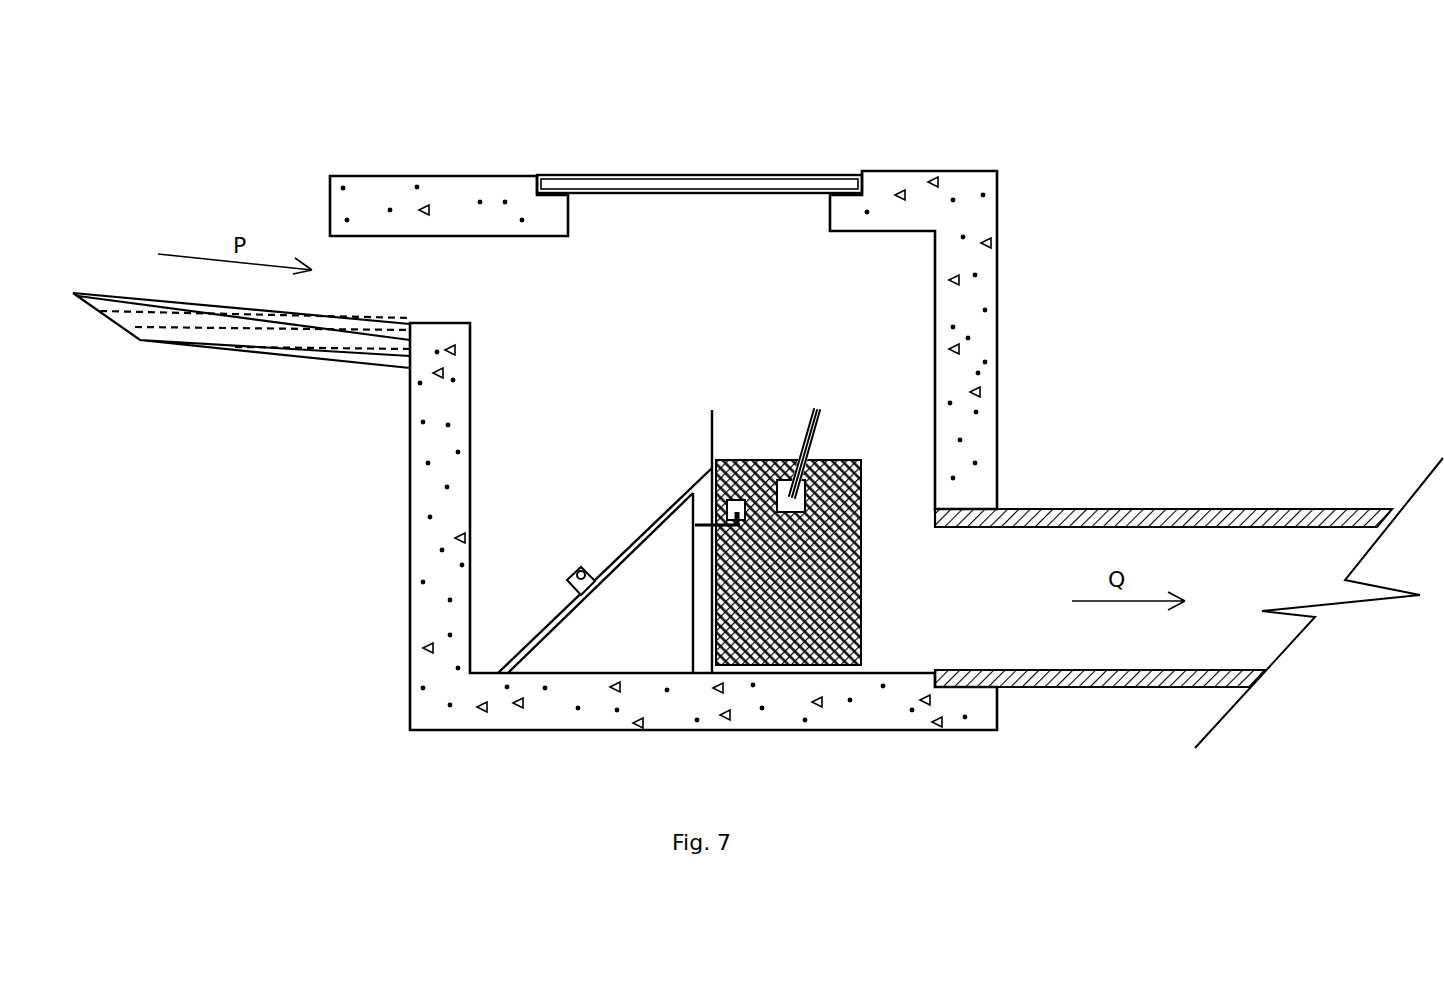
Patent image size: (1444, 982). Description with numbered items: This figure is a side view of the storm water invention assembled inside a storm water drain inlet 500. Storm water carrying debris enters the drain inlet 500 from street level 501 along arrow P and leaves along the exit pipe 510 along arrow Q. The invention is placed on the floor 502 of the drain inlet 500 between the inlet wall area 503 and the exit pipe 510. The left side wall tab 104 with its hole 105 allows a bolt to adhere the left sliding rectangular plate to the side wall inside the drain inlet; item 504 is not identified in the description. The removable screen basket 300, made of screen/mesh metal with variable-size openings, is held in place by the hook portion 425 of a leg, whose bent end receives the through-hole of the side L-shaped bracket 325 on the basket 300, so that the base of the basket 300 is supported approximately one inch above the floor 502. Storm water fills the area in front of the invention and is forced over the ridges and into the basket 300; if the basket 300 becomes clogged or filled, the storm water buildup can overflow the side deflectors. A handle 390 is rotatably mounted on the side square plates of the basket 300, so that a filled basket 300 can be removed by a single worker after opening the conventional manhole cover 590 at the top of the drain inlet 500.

The storm water drain inlet 500 is at (1075, 158).
The street level 501 is at (213, 303).
The floor 502 is at (612, 673).
The inlet wall area 503 is at (470, 570).
The mounting bracket 504 is at (587, 568).
The pipe 510 is at (1138, 525).
The manhole cover 590 is at (697, 183).
The removable screen basket 300 is at (822, 608).
The L-shaped bracket 325 is at (745, 462).
The handle 390 is at (818, 435).
The hook portion 425 is at (707, 530).
The left side wall tab 104 is at (573, 578).
The hole 105 is at (578, 571).